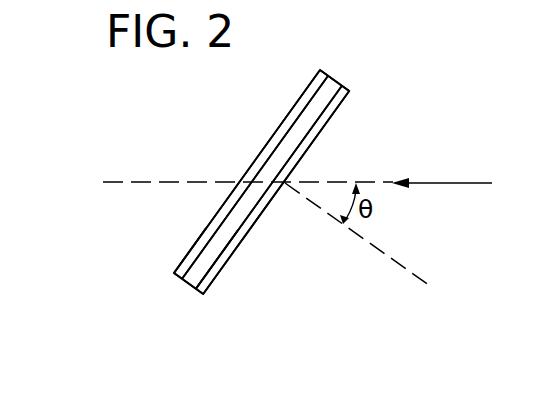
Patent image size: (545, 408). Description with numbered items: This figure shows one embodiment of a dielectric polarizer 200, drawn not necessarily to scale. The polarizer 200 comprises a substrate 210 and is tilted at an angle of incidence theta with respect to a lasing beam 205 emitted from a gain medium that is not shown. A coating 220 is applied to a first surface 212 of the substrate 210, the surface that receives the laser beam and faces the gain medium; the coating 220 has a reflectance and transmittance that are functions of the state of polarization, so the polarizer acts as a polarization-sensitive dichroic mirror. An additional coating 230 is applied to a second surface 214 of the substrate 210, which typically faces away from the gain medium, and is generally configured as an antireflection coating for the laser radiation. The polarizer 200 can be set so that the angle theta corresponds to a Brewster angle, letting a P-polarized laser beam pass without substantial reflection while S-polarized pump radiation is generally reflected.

The dielectric polarizer 200 is at (226, 128).
The lasing beam 205 is at (440, 183).
The substrate 210 is at (337, 83).
The first surface 212 is at (240, 228).
The second surface 214 is at (213, 226).
The coating 220 is at (330, 113).
The additional coating 230 is at (282, 123).